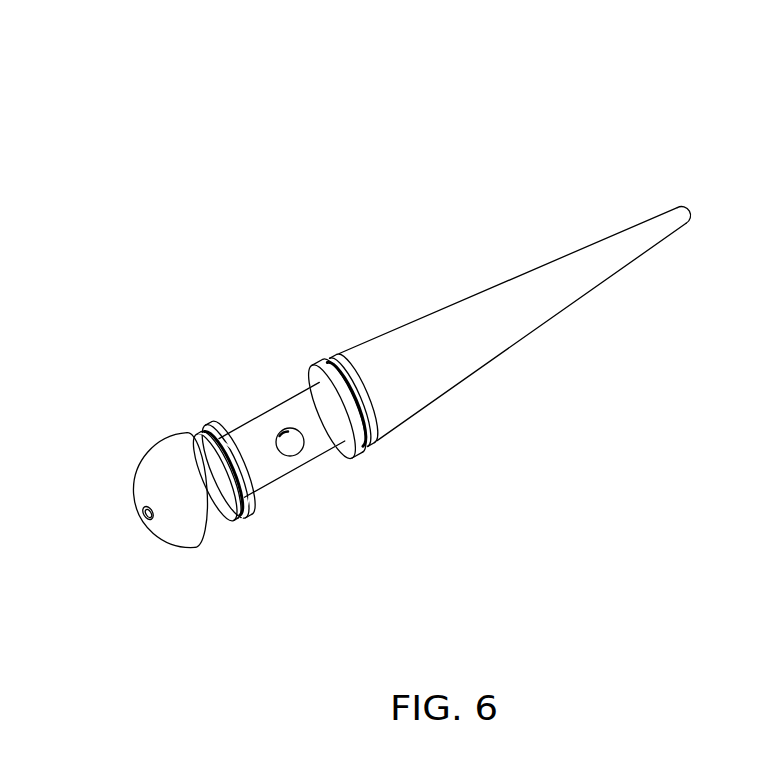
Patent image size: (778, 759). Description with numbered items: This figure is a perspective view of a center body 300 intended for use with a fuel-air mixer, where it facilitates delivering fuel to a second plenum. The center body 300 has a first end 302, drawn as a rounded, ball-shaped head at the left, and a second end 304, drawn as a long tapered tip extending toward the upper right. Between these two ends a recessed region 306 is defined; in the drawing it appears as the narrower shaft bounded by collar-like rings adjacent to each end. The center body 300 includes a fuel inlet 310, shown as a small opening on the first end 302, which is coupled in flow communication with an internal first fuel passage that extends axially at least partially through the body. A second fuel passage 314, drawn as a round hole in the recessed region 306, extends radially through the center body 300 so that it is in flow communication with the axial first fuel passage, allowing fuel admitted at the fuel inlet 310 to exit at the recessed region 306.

The center body 300 is at (384, 312).
The first end 302 is at (125, 504).
The second end 304 is at (633, 206).
The recessed region 306 is at (281, 425).
The fuel inlet 310 is at (145, 527).
The second fuel passage 314 is at (293, 447).